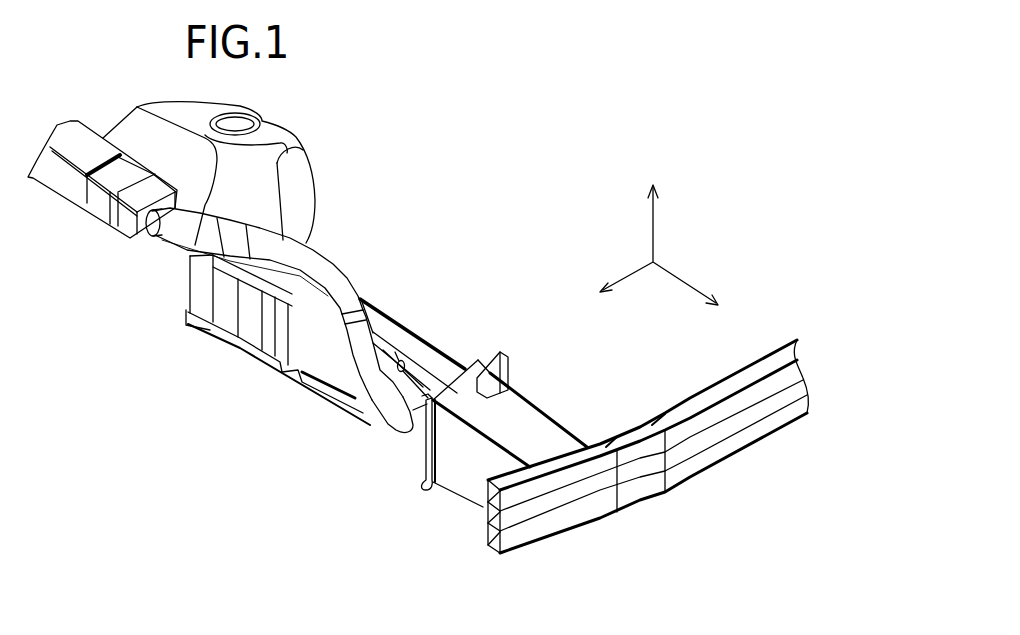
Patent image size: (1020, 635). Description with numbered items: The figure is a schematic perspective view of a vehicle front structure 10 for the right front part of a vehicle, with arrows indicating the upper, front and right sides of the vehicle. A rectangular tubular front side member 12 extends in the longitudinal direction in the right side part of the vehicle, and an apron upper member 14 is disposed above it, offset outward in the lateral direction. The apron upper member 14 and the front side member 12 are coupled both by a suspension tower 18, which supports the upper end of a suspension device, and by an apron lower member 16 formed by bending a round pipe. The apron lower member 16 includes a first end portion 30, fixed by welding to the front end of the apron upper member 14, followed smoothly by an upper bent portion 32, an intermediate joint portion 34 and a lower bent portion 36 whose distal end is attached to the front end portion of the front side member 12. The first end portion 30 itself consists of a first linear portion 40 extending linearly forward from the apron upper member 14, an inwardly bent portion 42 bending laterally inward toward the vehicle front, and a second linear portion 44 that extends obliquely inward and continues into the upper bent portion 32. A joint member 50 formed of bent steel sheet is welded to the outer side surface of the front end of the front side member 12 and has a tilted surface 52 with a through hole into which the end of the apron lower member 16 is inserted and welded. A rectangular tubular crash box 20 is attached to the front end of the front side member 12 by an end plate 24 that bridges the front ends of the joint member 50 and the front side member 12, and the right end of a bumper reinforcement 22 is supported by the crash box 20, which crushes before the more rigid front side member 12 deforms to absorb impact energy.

The vehicle front structure 10 is at (498, 171).
The front side member 12 is at (393, 330).
The apron upper member 14 is at (75, 135).
The apron lower member 16 is at (347, 259).
The suspension tower 18 is at (298, 173).
The crash box 20 is at (517, 440).
The bumper reinforcement 22 is at (700, 463).
The end plate 24 is at (483, 367).
The first end portion 30 is at (198, 263).
The upper bent portion 32 is at (318, 258).
The intermediate joint portion 34 is at (351, 378).
The lower bent portion 36 is at (402, 440).
The first linear portion 40 is at (143, 236).
The inwardly bent portion 42 is at (180, 238).
The second linear portion 44 is at (248, 237).
The joint member 50 is at (427, 380).
The tilted surface 52 is at (407, 443).